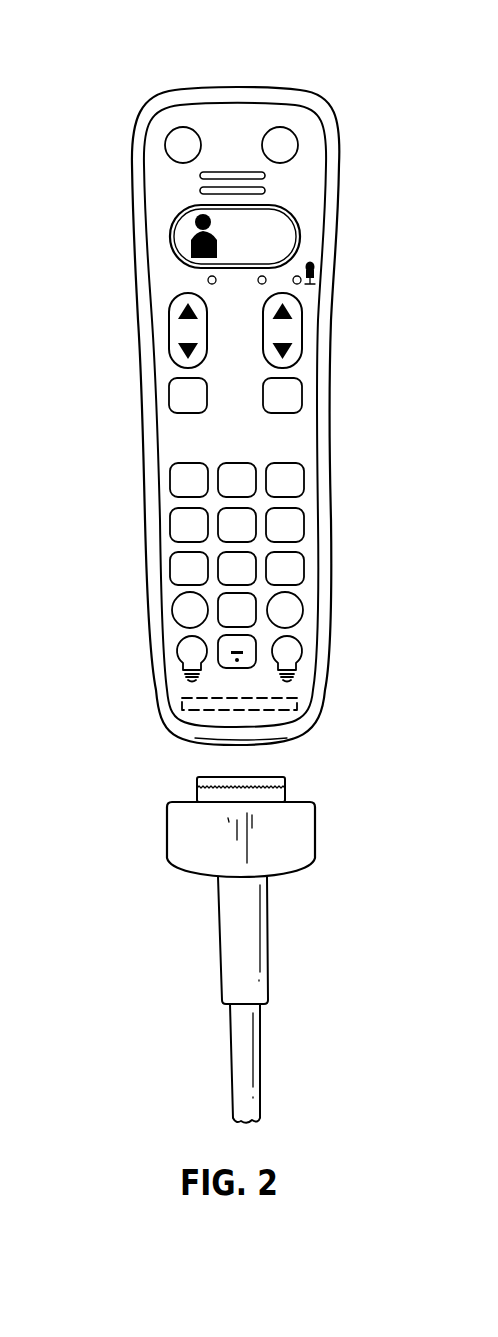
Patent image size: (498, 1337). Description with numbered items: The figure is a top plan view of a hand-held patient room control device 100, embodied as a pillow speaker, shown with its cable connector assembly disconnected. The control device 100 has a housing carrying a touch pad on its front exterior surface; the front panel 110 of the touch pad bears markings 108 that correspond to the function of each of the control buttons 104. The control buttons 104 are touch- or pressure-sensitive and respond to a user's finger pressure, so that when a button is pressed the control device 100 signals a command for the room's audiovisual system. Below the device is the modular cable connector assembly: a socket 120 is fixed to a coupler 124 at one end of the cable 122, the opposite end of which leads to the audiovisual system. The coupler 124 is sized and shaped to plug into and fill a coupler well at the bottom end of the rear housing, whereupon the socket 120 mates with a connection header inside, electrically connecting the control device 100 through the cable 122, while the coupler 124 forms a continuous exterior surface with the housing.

The control device 100 is at (244, 385).
The front panel 110 is at (150, 193).
The markings 108 is at (167, 252).
The control buttons 104 is at (304, 227).
The socket 120 is at (285, 788).
The coupler 124 is at (302, 845).
The cable 122 is at (257, 1047).